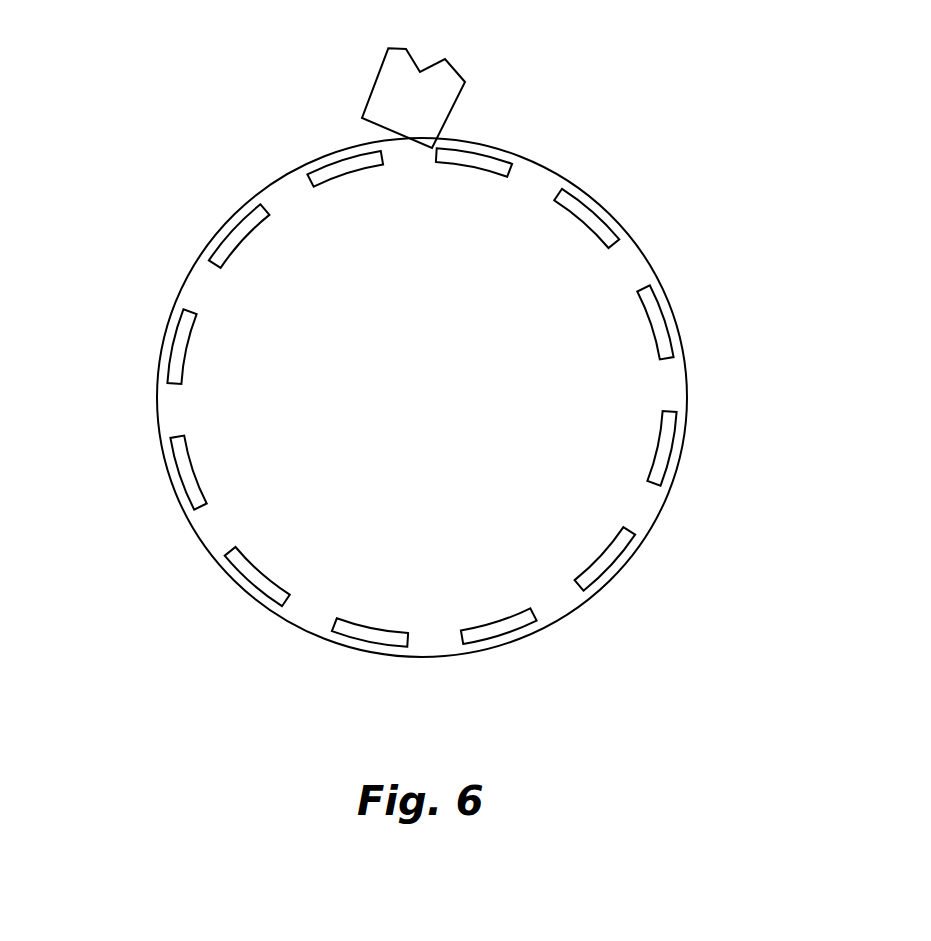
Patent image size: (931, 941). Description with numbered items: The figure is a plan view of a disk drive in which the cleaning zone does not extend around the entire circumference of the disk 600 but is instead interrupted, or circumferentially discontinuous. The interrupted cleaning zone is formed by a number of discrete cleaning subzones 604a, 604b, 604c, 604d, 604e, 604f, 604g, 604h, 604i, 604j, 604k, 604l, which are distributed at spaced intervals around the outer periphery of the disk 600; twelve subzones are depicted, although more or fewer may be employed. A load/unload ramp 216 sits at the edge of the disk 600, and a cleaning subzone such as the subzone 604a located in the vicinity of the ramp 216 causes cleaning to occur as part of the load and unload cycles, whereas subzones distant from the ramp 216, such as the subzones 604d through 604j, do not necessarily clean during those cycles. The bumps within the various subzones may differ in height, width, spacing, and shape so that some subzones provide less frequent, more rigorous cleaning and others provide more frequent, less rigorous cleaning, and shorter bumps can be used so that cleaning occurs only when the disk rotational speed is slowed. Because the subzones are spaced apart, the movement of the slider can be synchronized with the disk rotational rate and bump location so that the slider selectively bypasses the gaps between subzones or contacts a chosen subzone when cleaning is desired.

The disk 600 is at (586, 601).
The load/unload ramp 216 is at (377, 77).
The cleaning subzone 604a is at (485, 163).
The cleaning subzone 604b is at (588, 218).
The cleaning subzone 604c is at (667, 325).
The cleaning subzone 604d is at (665, 450).
The cleaning subzone 604e is at (618, 562).
The cleaning subzone 604f is at (503, 640).
The cleaning subzone 604g is at (370, 643).
The cleaning subzone 604h is at (253, 581).
The cleaning subzone 604i is at (182, 470).
The cleaning subzone 604j is at (177, 332).
The cleaning subzone 604k is at (232, 230).
The cleaning subzone 604l is at (352, 152).